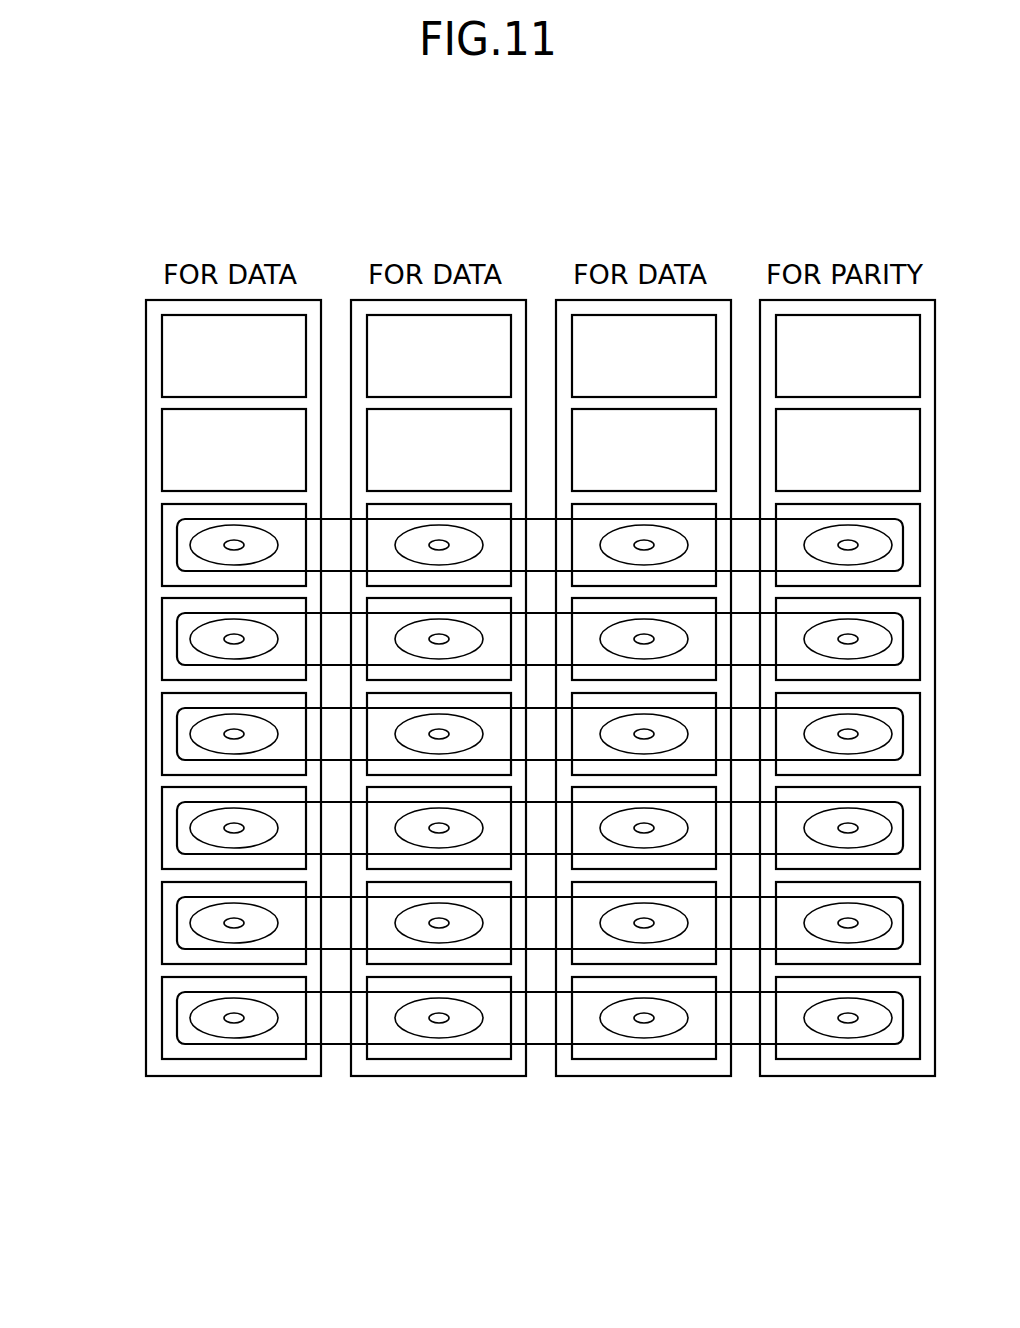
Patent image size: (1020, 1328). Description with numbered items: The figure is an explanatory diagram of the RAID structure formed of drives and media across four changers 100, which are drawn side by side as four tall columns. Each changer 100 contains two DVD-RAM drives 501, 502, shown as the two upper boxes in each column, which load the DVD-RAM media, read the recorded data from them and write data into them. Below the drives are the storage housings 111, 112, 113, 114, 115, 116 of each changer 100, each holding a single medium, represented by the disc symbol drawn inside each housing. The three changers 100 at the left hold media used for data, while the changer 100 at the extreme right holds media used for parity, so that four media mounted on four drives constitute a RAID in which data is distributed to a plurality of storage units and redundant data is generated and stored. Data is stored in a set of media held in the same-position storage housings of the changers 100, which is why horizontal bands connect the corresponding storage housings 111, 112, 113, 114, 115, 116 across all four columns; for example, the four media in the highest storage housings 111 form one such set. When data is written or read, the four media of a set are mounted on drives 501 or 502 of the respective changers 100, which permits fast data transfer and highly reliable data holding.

The changer 100 is at (236, 1077).
The DVD-RAM drive 501 is at (162, 357).
The DVD-RAM drive 502 is at (162, 450).
The storage housing 111 is at (162, 545).
The storage housing 112 is at (162, 639).
The storage housing 113 is at (162, 734).
The storage housing 114 is at (162, 828).
The storage housing 115 is at (162, 923).
The storage housing 116 is at (162, 1018).